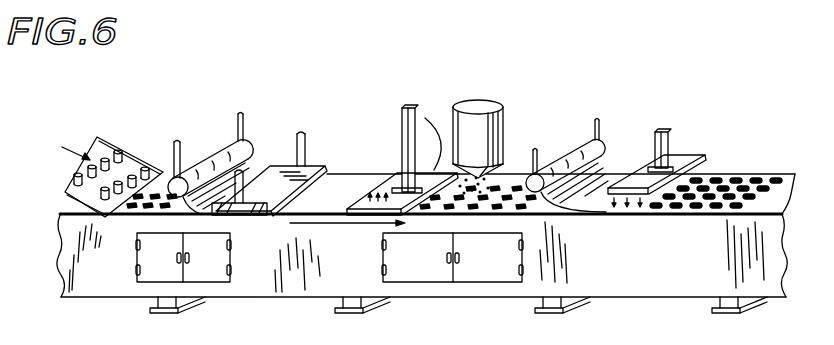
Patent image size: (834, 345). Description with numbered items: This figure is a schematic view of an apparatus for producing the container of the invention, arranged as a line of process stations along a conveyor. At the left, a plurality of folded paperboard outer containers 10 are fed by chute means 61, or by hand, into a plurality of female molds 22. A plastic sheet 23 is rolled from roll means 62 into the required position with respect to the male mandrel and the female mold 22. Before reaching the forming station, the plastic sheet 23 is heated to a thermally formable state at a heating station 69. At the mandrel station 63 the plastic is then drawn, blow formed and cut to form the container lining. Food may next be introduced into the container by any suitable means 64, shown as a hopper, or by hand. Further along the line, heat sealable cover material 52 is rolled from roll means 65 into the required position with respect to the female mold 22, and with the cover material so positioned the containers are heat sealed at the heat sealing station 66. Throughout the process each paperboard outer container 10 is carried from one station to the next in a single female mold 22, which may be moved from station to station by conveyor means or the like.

The folded paperboard outer container 10 is at (95, 218).
The female mold 22 is at (133, 220).
The plastic sheet 23 is at (216, 148).
The heat sealable cover material 52 is at (605, 178).
The chute means 61 is at (135, 144).
The roll means 62 is at (180, 168).
The mandrel station 63 is at (415, 108).
The food introducing means 64 is at (497, 104).
The roll means 65 is at (609, 137).
The heat sealing station 66 is at (668, 133).
The heating station 69 is at (268, 219).